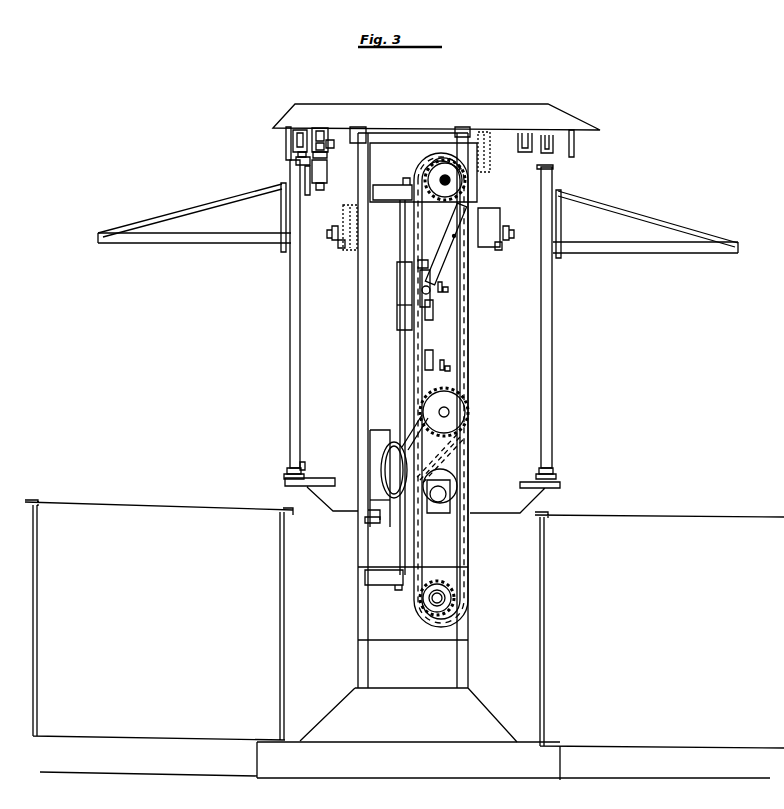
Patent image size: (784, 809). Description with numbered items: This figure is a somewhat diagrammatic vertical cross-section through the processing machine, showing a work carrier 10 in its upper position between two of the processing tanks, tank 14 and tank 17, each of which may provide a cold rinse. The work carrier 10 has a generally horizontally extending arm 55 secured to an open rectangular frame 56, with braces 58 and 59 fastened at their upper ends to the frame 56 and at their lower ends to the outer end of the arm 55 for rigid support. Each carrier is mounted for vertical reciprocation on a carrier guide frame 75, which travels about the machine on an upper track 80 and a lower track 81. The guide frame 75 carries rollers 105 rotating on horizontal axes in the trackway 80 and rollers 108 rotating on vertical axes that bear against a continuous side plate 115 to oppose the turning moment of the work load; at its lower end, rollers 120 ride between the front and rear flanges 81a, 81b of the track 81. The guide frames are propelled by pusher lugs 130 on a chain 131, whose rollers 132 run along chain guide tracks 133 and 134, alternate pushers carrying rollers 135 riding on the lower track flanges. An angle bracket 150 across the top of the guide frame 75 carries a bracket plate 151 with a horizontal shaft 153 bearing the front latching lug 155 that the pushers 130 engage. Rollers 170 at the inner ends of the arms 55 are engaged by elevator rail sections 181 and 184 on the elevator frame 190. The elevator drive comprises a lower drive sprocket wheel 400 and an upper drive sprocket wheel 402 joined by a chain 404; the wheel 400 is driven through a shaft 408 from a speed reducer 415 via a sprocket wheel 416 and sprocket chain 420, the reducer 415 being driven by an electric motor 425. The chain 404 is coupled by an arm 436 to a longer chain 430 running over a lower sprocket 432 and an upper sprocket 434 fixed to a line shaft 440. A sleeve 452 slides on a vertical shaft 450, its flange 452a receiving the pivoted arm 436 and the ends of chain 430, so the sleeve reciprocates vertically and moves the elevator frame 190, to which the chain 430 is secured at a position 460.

The work carrier 10 is at (151, 210).
The tank 14 is at (70, 502).
The tank 17 is at (728, 515).
The arm 55 is at (165, 240).
The open rectangular frame 56 is at (283, 253).
The brace 58 is at (690, 230).
The brace 59 is at (183, 212).
The carrier guide frame 75 is at (284, 326).
The upper track 80 is at (300, 128).
The lower track 81 is at (284, 477).
The front vertical flange 81a is at (287, 472).
The rear vertical flange 81b is at (303, 470).
The roller 105 is at (293, 141).
The roller 108 is at (298, 155).
The side plate 115 is at (286, 135).
The roller 120 is at (293, 486).
The pusher lug 130 is at (328, 152).
The chain 131 is at (320, 135).
The roller 132 is at (322, 143).
The chain guide track 133 is at (316, 130).
The chain guide track 134 is at (525, 133).
The roller 135 is at (330, 146).
The angle bracket 150 is at (297, 163).
The bracket plate 151 is at (309, 186).
The horizontal shaft 153 is at (328, 170).
The front latching lug 155 is at (325, 186).
The roller 170 is at (334, 226).
The elevator rail section 181 is at (340, 244).
The elevator rail section 184 is at (500, 248).
The elevator frame 190 is at (496, 207).
The lower drive sprocket wheel 400 is at (458, 416).
The upper drive sprocket wheel 402 is at (458, 233).
The chain 404 is at (455, 441).
The shaft 408 is at (449, 410).
The speed reducer 415 is at (380, 520).
The sprocket wheel 416 is at (388, 500).
The sprocket chain 420 is at (392, 445).
The electric motor 425 is at (455, 478).
The chain 430 is at (440, 152).
The lower sprocket 432 is at (446, 601).
The upper sprocket 434 is at (452, 158).
The arm 436 is at (418, 266).
The line shaft 440 is at (440, 177).
The vertical shaft 450 is at (398, 555).
The sleeve 452 is at (397, 296).
The flange 452a is at (412, 310).
The securing position 460 is at (418, 232).